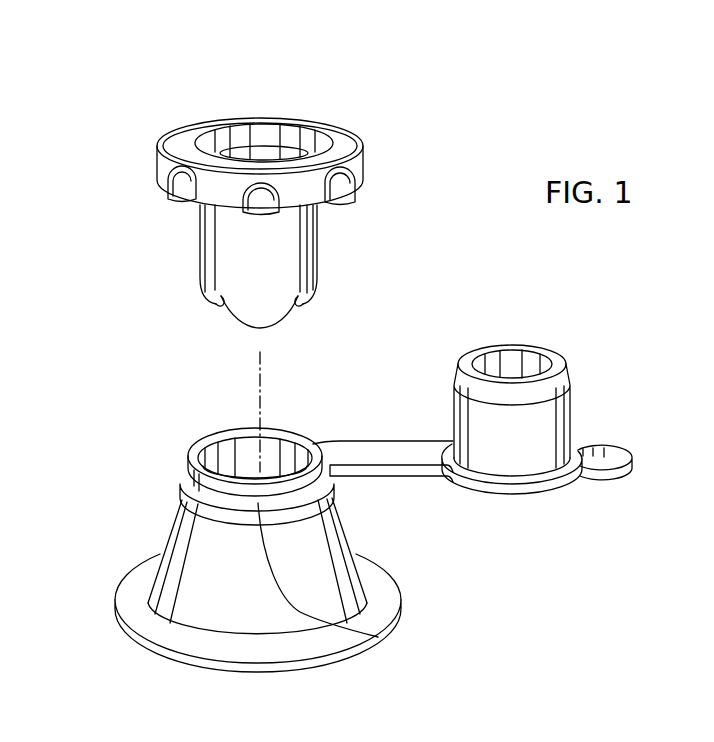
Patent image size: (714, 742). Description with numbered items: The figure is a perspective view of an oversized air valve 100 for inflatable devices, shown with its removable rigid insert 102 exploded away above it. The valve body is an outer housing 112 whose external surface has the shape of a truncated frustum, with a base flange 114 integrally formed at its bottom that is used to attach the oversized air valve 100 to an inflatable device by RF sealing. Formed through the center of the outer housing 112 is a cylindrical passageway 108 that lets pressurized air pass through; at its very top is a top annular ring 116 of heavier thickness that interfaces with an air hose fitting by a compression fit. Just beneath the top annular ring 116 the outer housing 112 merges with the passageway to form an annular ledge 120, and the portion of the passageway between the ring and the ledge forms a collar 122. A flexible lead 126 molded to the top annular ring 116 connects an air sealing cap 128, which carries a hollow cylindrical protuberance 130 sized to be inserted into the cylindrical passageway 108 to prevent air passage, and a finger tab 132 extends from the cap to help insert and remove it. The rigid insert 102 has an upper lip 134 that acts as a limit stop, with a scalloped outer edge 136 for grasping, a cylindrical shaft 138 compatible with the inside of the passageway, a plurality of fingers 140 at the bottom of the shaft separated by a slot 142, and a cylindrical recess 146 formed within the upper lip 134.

The oversized air valve 100 is at (146, 278).
The removable rigid insert 102 is at (322, 110).
The cylindrical passageway 108 is at (212, 445).
The outer housing 112 is at (182, 572).
The base flange 114 is at (143, 648).
The top annular ring 116 is at (281, 430).
The annular ledge 120 is at (314, 505).
The collar 122 is at (378, 637).
The flexible lead 126 is at (362, 441).
The air sealing cap 128 is at (572, 430).
The hollow cylindrical protuberance 130 is at (524, 342).
The finger tab 132 is at (620, 446).
The upper lip 134 is at (355, 150).
The scalloped outer edge 136 is at (345, 200).
The shaft 138 is at (318, 244).
The plurality of fingers 140 is at (258, 328).
The slot 142 is at (298, 309).
The cylindrical recess 146 is at (255, 137).